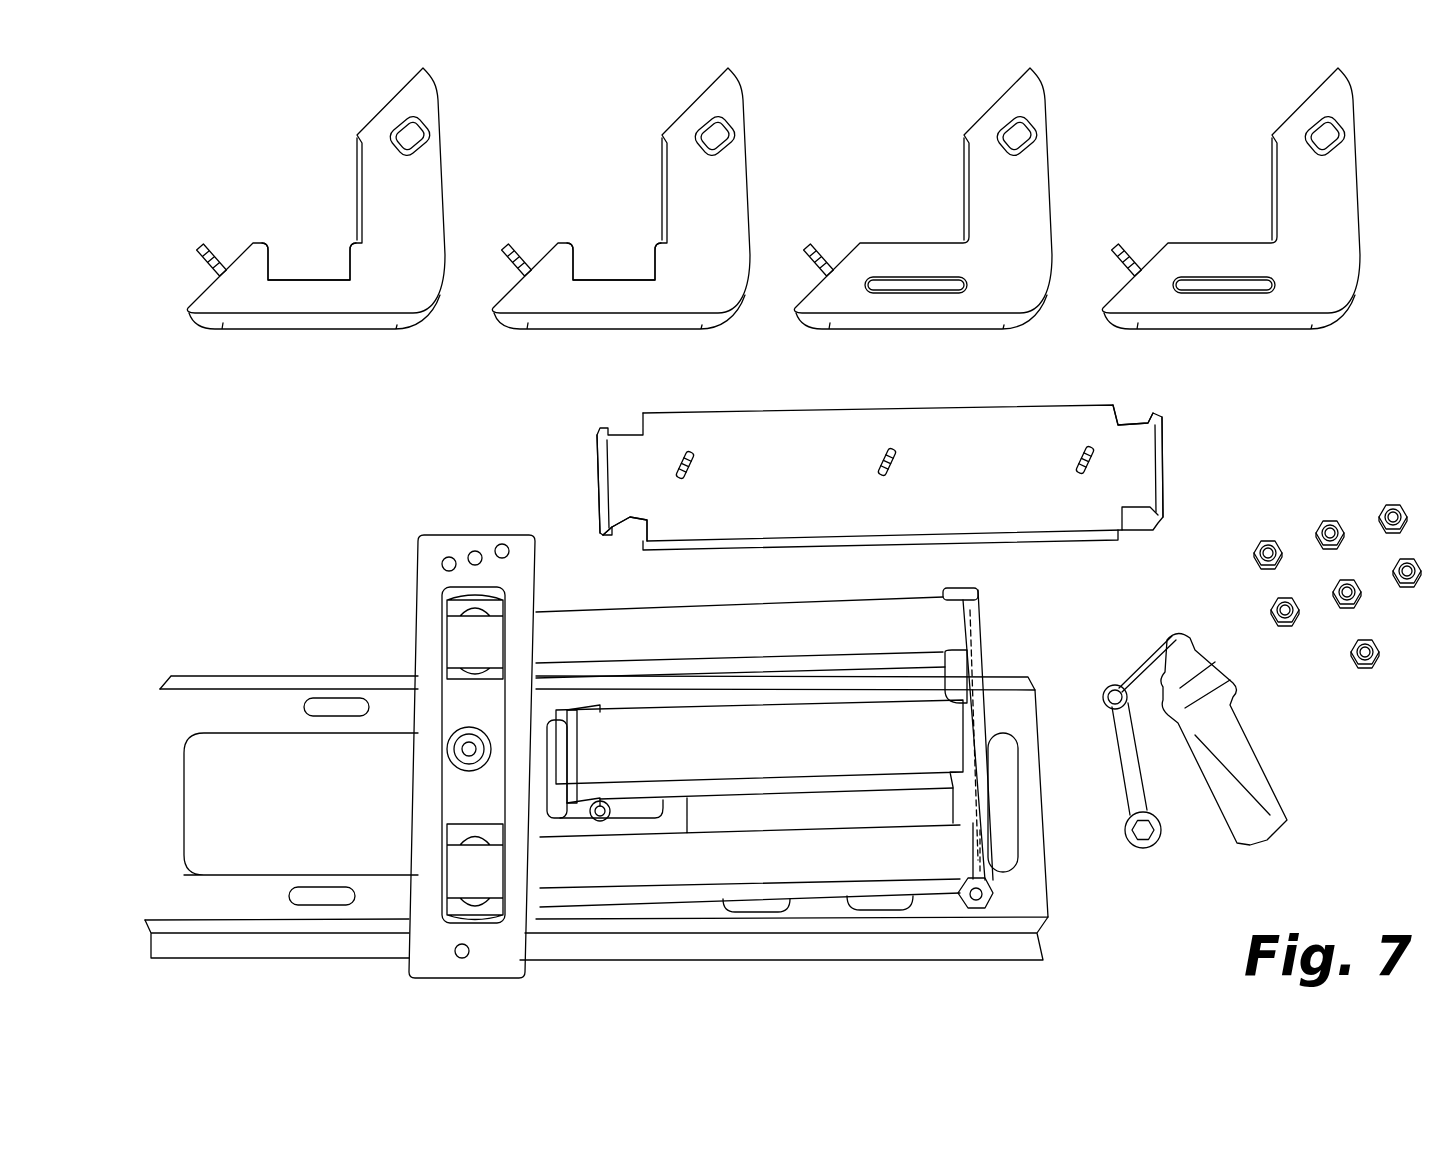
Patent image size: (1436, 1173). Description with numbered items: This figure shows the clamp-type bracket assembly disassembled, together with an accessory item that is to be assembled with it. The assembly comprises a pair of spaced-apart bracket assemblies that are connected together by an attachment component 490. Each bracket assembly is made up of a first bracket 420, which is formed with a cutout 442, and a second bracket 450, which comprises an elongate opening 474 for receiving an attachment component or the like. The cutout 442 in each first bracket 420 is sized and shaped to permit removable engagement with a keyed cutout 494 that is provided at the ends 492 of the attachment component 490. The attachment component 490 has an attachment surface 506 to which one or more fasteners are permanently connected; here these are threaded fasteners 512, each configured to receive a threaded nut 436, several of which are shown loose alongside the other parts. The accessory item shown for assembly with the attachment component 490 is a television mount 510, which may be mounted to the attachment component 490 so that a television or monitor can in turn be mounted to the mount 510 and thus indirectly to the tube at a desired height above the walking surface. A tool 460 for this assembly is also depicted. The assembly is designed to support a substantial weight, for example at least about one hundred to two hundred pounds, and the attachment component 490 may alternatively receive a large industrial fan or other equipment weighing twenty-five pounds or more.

The first bracket 420 is at (308, 137).
The cutout 442 is at (306, 268).
The second bracket 450 is at (918, 142).
The bracket slot 474 is at (913, 273).
The attachment component 490 is at (863, 473).
The plate end tab 492 is at (577, 474).
The keyed cutout 494 is at (1132, 417).
The attachment surface 506 is at (942, 452).
The threaded fasteners 512 is at (880, 462).
The television mount 510 is at (245, 640).
The threaded nut 436 is at (1362, 668).
The tool 460 is at (1190, 822).